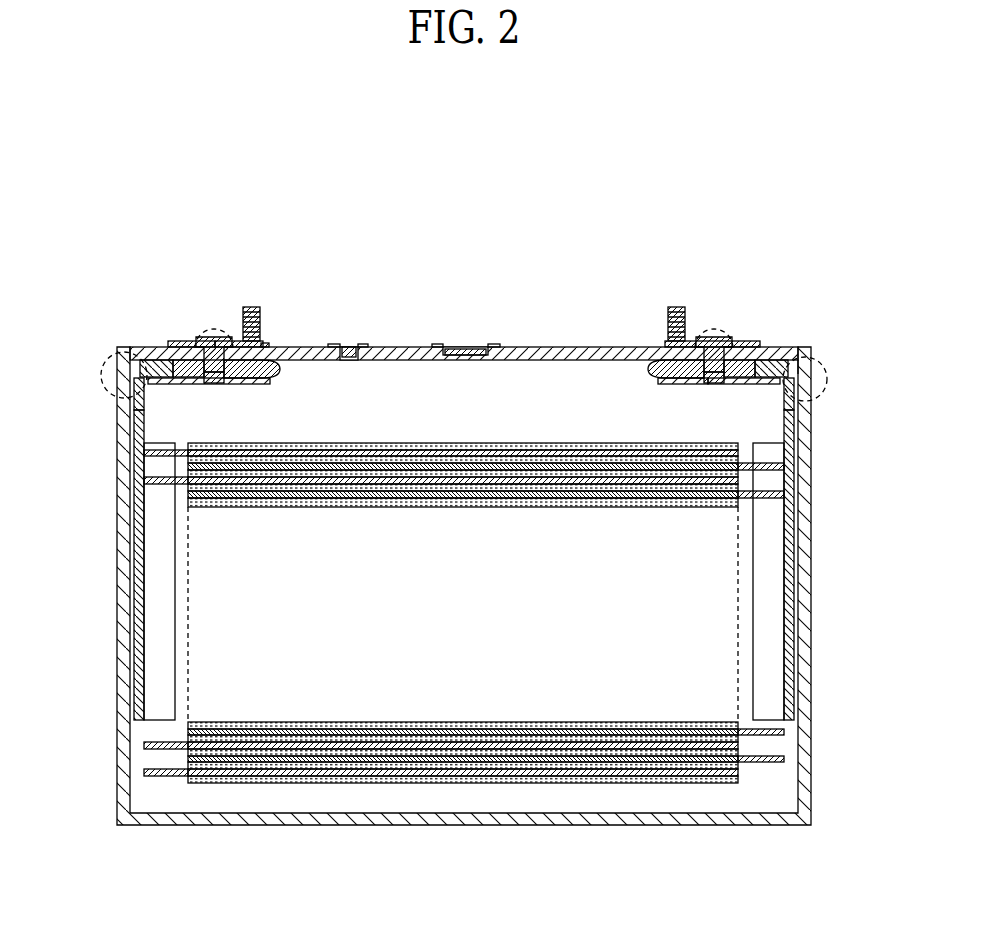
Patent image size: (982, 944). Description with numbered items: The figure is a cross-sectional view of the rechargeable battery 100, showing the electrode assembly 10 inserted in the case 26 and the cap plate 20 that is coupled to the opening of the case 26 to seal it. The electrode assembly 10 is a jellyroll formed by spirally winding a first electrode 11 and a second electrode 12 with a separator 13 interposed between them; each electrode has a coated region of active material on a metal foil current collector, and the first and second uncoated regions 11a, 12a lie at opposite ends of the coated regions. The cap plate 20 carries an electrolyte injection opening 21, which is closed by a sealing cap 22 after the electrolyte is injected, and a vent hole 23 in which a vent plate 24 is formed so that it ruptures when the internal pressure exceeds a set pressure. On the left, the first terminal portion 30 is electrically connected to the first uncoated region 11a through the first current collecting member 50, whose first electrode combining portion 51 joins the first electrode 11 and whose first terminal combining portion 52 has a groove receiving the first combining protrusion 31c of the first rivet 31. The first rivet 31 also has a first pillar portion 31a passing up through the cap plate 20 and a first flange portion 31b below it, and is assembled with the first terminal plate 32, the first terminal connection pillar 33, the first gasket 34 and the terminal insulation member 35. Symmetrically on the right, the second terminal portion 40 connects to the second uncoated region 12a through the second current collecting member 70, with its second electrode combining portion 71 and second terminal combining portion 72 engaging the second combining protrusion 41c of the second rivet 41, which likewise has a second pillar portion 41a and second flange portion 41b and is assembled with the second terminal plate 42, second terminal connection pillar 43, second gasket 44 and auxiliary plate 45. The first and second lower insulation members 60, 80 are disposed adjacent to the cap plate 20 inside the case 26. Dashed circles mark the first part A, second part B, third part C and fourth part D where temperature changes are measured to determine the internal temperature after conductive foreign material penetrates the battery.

The rechargeable battery 100 is at (484, 176).
The electrode assembly 10 is at (462, 670).
The first electrode 11 is at (251, 777).
The first electrode uncoated region 11a is at (160, 777).
The second electrode 12 is at (330, 762).
The second electrode uncoated region 12a is at (760, 763).
The separator 13 is at (468, 751).
The cap plate 20 is at (540, 334).
The electrolyte injection opening 21 is at (348, 360).
The sealing cap 22 is at (348, 346).
The vent hole 23 is at (460, 358).
The vent plate 24 is at (465, 348).
The case 26 is at (804, 669).
The first terminal portion 30 is at (163, 234).
The first rivet 31 is at (212, 326).
The first pillar portion 31a is at (217, 386).
The first flange portion 31b is at (287, 378).
The first combining protrusion 31c is at (187, 387).
The first terminal plate 32 is at (268, 341).
The first terminal connection pillar 33 is at (249, 306).
The first gasket 34 is at (176, 342).
The terminal insulation member 35 is at (266, 345).
The second terminal portion 40 is at (808, 234).
The second rivet 41 is at (718, 325).
The second pillar portion 41a is at (650, 369).
The second flange portion 41b is at (713, 384).
The second combining protrusion 41c is at (750, 379).
The second terminal plate 42 is at (758, 346).
The second terminal connection pillar 43 is at (680, 306).
The second gasket 44 is at (737, 356).
The auxiliary plate 45 is at (644, 360).
The first current collecting member 50 is at (123, 477).
The first electrode combining portion 51 is at (158, 546).
The first terminal combining portion 52 is at (127, 407).
The first lower insulation member 60 is at (122, 372).
The second current collecting member 70 is at (805, 525).
The second electrode combining portion 71 is at (766, 590).
The second terminal combining portion 72 is at (786, 412).
The second lower insulation member 80 is at (806, 366).
The first part A is at (112, 368).
The second part B is at (822, 380).
The third part C is at (173, 361).
The fourth part D is at (780, 354).